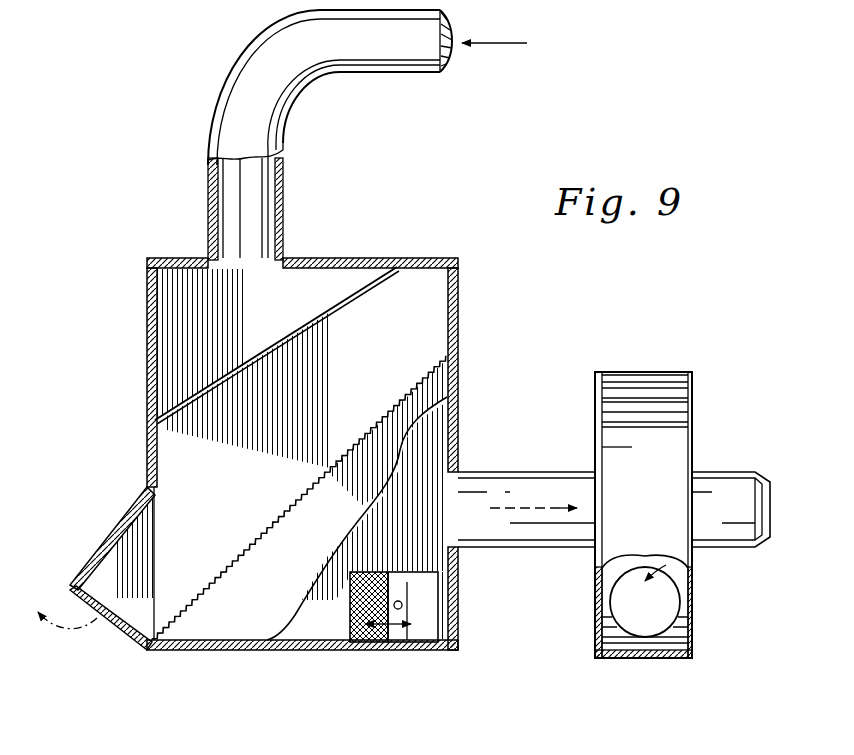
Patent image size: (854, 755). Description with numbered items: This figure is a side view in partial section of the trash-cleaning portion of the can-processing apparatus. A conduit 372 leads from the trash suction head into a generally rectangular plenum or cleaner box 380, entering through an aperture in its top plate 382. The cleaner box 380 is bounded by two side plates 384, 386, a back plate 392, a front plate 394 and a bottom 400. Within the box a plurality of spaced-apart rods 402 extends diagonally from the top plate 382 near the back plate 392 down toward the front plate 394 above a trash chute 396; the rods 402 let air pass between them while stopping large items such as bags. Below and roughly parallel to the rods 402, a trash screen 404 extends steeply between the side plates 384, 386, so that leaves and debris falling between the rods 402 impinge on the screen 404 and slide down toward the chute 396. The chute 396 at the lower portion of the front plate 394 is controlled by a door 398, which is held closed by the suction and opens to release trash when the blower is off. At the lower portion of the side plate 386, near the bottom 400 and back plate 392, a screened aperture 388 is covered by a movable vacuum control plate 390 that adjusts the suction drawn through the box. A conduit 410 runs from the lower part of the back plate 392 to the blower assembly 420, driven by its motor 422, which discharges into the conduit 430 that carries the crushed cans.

The conduit 372 is at (208, 131).
The cleaner box 380 is at (392, 250).
The top plate 382 is at (173, 259).
The side plate 384 is at (178, 312).
The side plate 386 is at (450, 431).
The screened aperture 388 is at (365, 572).
The vacuum control plate 390 is at (408, 649).
The back plate 392 is at (460, 302).
The front plate 394 is at (147, 389).
The trash chute 396 is at (118, 528).
The door 398 is at (110, 625).
The bottom 400 is at (207, 651).
The rods 402 is at (287, 337).
The trash screen 404 is at (390, 410).
The conduit 410 is at (570, 452).
The blower assembly 420 is at (640, 362).
The motor 422 is at (742, 472).
The conduit 430 is at (668, 628).